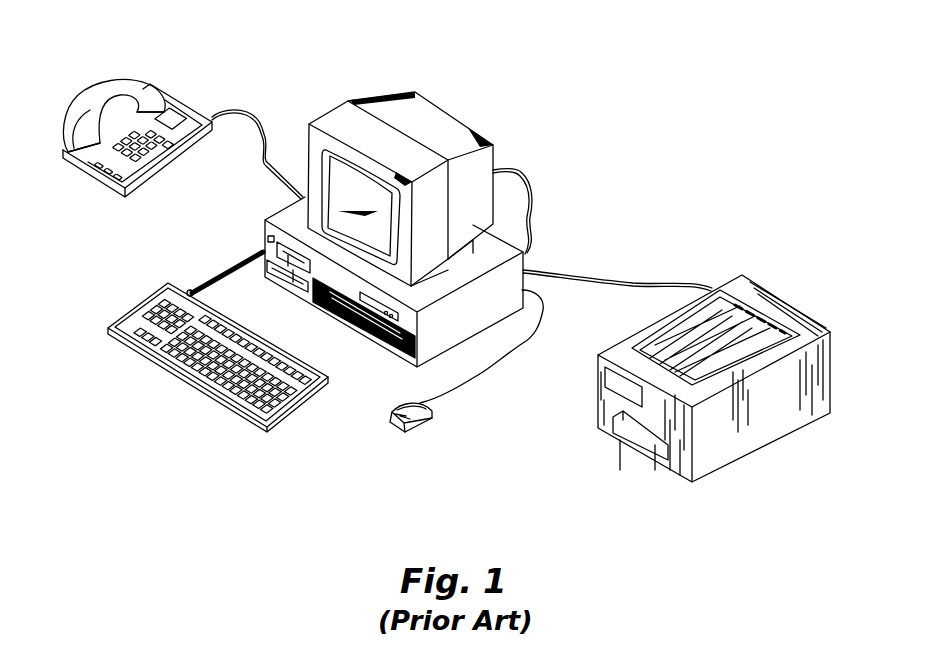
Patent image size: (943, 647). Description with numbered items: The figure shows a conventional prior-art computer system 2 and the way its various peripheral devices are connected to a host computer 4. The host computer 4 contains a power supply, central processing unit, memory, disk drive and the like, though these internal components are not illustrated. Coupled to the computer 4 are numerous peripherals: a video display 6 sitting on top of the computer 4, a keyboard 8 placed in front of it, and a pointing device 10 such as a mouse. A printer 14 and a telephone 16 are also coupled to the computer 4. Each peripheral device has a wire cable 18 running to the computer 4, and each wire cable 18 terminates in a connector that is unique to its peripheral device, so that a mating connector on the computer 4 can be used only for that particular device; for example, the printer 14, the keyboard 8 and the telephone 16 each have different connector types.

The computer system 2 is at (652, 103).
The host computer 4 is at (265, 232).
The video display 6 is at (318, 122).
The keyboard 8 is at (310, 407).
The pointing device 10 is at (389, 419).
The printer 14 is at (788, 408).
The telephone 16 is at (140, 80).
The wire cable 18 is at (252, 113).